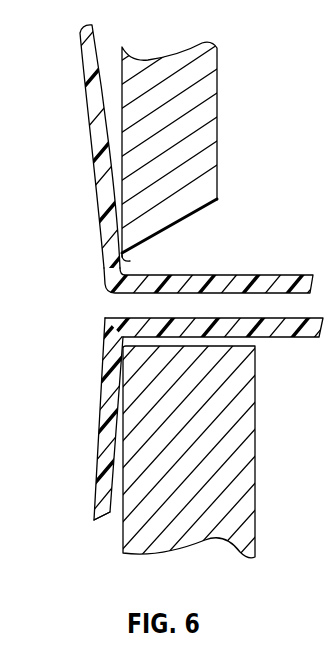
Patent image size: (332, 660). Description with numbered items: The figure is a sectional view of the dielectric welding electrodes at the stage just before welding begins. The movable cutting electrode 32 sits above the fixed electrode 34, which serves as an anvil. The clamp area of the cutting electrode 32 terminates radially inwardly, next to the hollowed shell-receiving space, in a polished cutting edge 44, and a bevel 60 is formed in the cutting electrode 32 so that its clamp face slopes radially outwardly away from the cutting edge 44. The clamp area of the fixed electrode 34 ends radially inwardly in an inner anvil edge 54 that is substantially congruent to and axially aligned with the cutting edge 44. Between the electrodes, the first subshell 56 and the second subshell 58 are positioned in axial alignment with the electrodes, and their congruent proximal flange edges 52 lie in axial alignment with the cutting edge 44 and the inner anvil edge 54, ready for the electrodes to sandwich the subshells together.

The cutting electrode 32 is at (187, 76).
The fixed electrode 34 is at (232, 500).
The cutting edge 44 is at (128, 260).
The proximal flange edges 52 is at (108, 290).
The inner anvil edge 54 is at (107, 360).
The first subshell 56 is at (91, 57).
The second subshell 58 is at (107, 462).
The bevel 60 is at (197, 216).